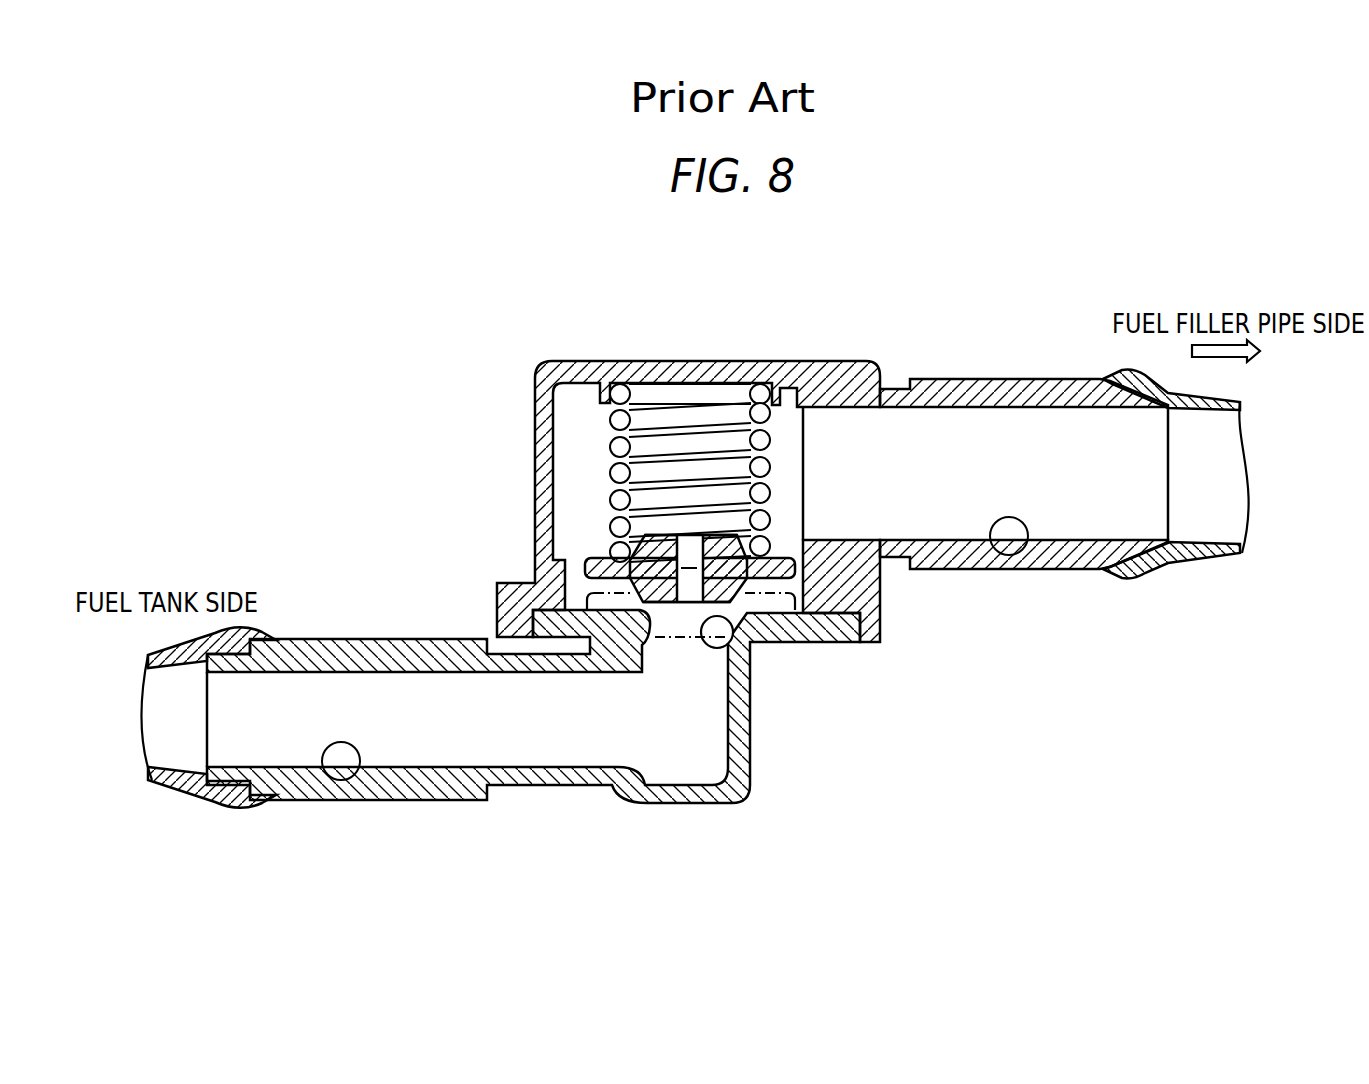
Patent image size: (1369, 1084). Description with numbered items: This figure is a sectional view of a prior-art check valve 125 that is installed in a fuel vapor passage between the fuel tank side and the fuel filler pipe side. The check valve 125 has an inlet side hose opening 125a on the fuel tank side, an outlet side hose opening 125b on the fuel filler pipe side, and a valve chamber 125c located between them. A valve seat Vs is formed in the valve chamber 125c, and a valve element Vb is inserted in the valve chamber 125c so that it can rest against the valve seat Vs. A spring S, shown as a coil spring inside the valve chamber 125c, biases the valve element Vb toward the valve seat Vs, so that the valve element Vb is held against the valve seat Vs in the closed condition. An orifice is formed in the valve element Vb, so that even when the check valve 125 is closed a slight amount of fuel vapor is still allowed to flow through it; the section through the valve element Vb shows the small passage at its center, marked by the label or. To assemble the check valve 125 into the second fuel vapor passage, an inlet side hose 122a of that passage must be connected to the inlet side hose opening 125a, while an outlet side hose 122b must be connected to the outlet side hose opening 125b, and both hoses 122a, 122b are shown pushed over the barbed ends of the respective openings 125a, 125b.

The check valve 125 is at (536, 350).
The inlet side hose opening 125a is at (357, 774).
The outlet side hose opening 125b is at (998, 550).
The valve chamber 125c is at (576, 567).
The inlet side hose 122a is at (167, 782).
The outlet side hose 122b is at (1218, 555).
The spring S is at (620, 449).
The O-ring or is at (690, 532).
The valve element Vb is at (603, 557).
The valve seat Vs is at (647, 618).